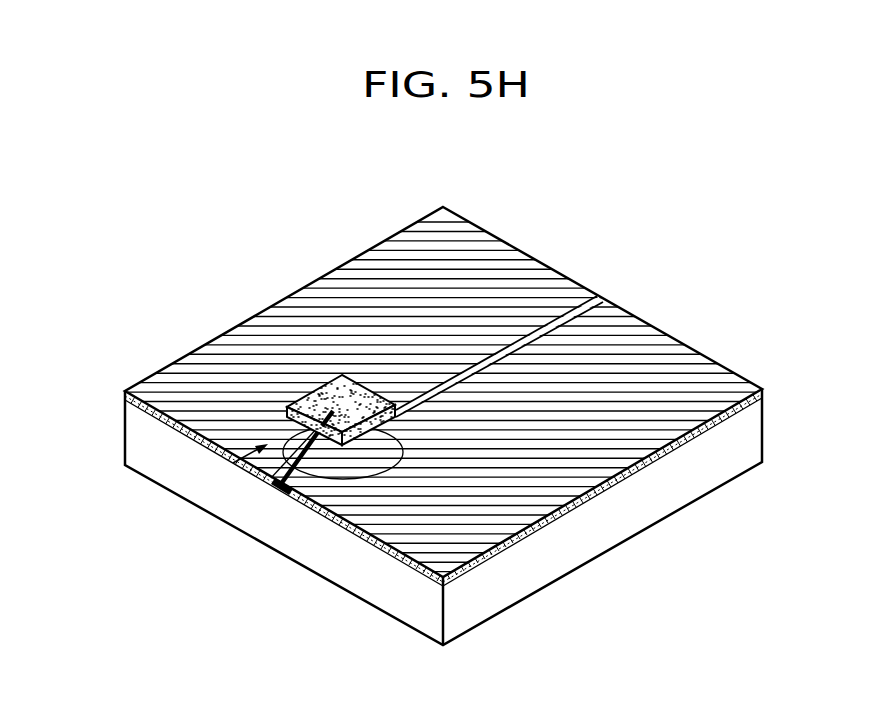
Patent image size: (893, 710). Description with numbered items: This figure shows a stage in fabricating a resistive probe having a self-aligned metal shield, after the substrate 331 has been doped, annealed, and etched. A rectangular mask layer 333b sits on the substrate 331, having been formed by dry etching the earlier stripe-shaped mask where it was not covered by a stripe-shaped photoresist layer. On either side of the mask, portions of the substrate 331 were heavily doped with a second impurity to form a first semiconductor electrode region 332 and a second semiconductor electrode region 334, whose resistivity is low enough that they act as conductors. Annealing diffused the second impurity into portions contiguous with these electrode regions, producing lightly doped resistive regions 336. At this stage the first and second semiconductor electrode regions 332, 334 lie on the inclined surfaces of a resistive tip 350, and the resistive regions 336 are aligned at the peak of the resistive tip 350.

The substrate 331 is at (300, 550).
The first semiconductor electrode region 332 is at (288, 433).
The rectangular mask layer 333b is at (333, 372).
The second semiconductor electrode region 334 is at (357, 463).
The resistive region 336 is at (305, 395).
The resistive tip 350 is at (233, 463).